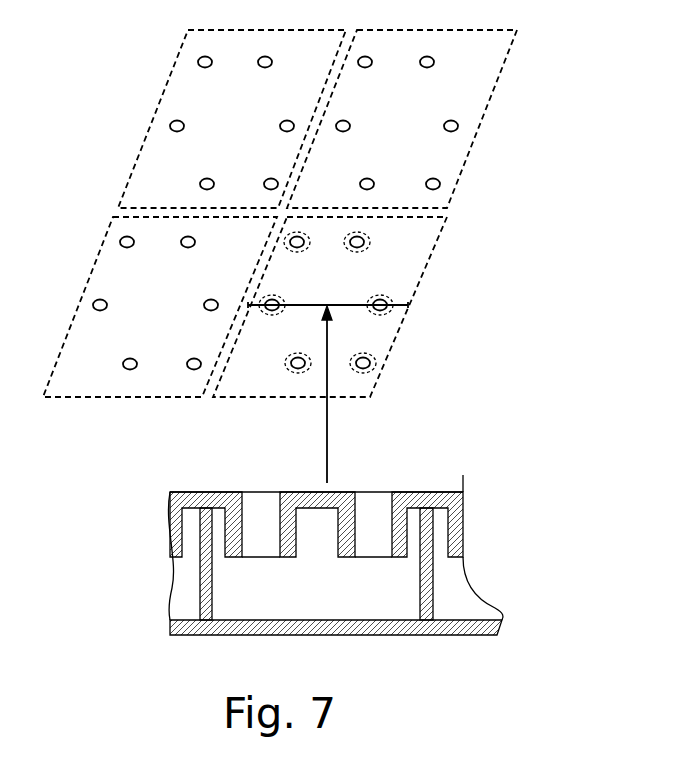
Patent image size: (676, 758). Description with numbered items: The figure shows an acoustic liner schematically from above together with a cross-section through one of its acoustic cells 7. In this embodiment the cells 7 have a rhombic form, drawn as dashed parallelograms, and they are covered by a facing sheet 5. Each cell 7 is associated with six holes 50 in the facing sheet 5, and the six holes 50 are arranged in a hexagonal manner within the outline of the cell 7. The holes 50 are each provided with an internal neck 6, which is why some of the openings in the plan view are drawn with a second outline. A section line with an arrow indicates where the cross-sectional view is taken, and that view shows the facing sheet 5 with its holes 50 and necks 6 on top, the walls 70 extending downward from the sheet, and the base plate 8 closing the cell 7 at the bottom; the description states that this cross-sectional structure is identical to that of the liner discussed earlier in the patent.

The facing sheet 5 is at (467, 75).
The internal neck 6 is at (368, 242).
The acoustic cell 7 is at (508, 52).
The base plate 8 is at (365, 627).
The hole 50 is at (441, 183).
The wall 70 is at (212, 580).